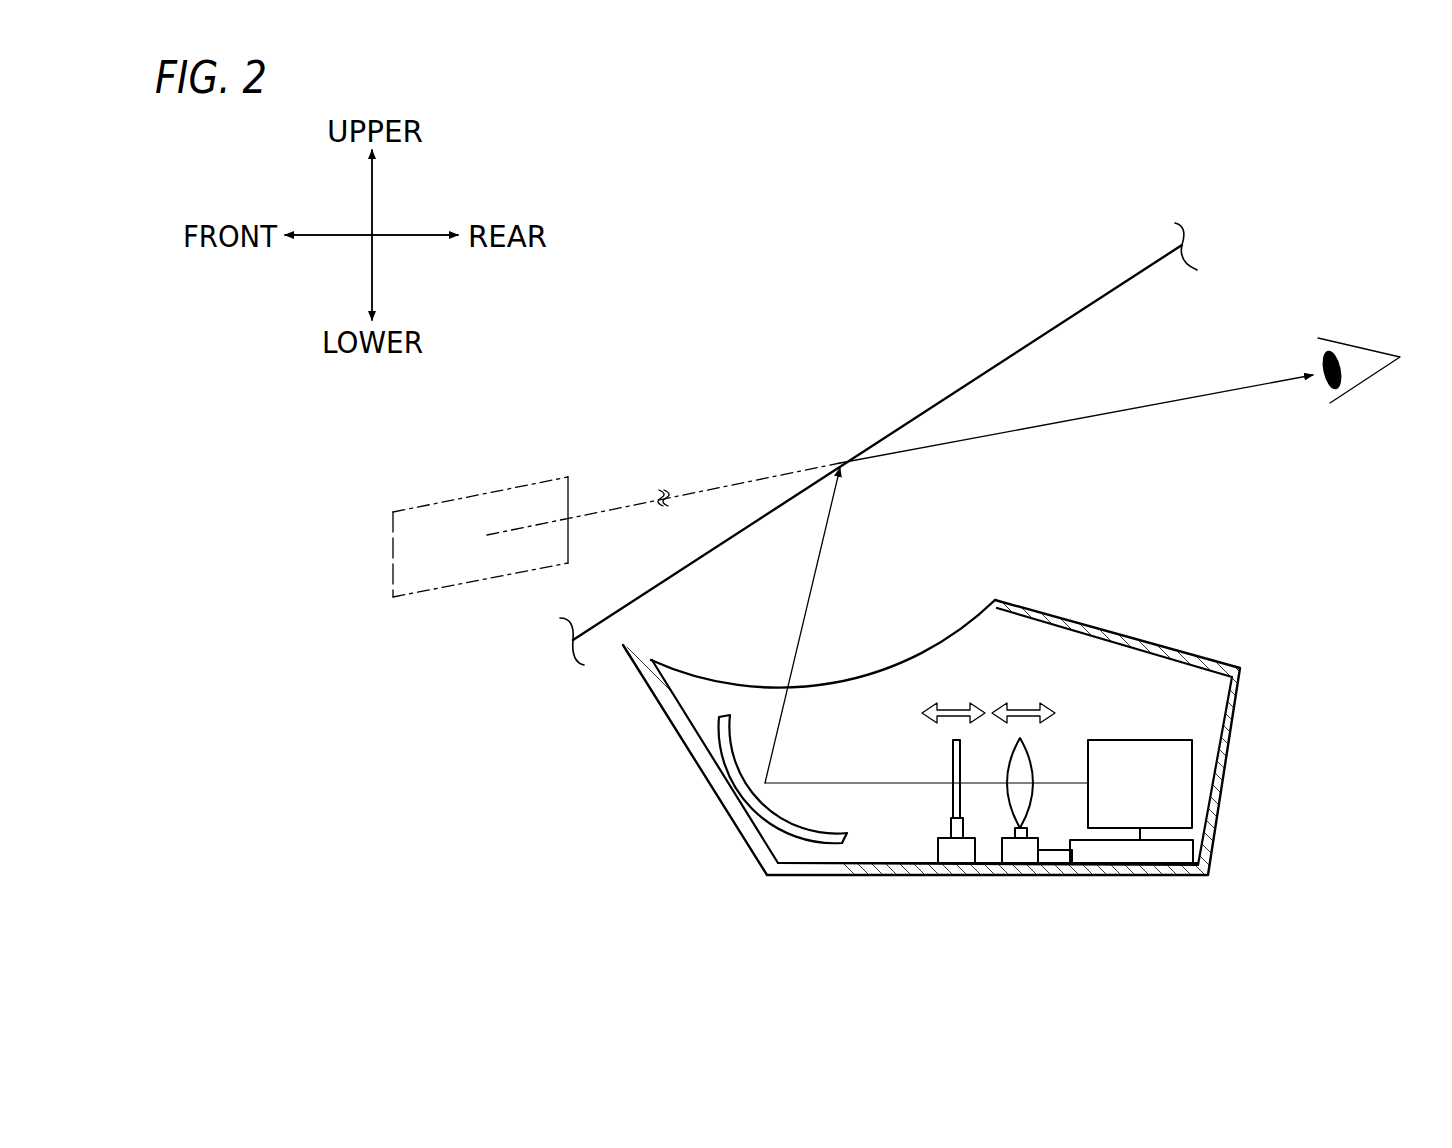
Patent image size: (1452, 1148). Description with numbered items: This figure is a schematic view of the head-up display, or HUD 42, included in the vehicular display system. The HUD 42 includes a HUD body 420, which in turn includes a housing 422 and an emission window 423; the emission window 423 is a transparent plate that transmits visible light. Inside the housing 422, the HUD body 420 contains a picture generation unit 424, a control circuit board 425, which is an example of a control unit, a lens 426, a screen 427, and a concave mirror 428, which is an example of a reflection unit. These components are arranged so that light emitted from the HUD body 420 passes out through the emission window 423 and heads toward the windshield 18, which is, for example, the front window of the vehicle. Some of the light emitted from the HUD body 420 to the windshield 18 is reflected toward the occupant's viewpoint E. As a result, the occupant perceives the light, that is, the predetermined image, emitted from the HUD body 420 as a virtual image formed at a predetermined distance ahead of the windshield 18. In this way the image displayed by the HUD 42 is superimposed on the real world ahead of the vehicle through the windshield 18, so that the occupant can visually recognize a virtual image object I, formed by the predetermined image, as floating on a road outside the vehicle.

The windshield 18 is at (1082, 308).
The occupant's viewpoint E is at (1350, 347).
The virtual image object I is at (500, 488).
The HUD 42 is at (1006, 757).
The HUD body 420 is at (1233, 732).
The housing 422 is at (1057, 874).
The emission window 423 is at (910, 660).
The picture generation unit 424 is at (1192, 780).
The control circuit board 425 is at (1148, 852).
The lens 426 is at (1010, 806).
The screen 427 is at (953, 797).
The concave mirror 428 is at (737, 767).